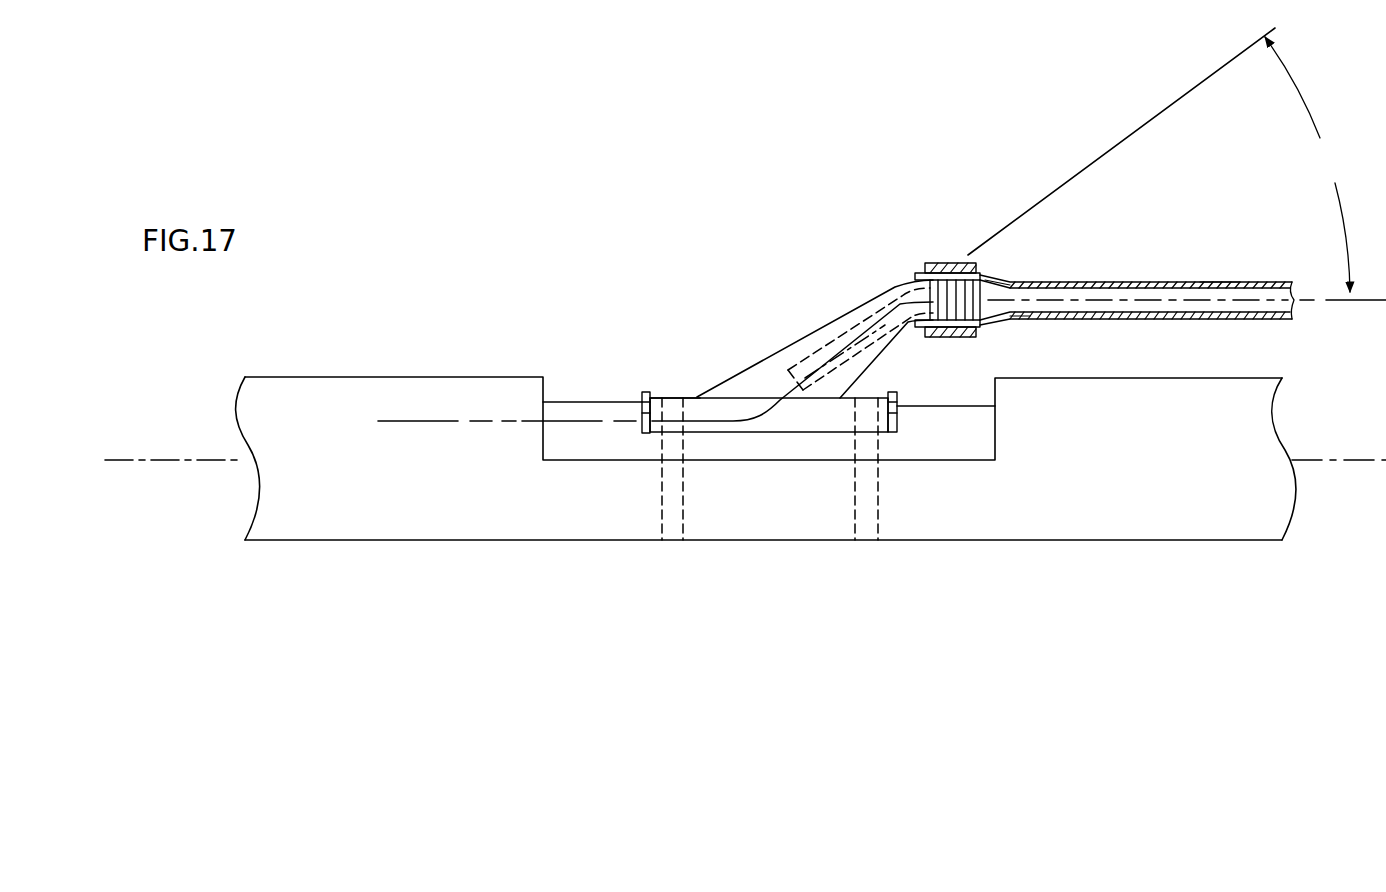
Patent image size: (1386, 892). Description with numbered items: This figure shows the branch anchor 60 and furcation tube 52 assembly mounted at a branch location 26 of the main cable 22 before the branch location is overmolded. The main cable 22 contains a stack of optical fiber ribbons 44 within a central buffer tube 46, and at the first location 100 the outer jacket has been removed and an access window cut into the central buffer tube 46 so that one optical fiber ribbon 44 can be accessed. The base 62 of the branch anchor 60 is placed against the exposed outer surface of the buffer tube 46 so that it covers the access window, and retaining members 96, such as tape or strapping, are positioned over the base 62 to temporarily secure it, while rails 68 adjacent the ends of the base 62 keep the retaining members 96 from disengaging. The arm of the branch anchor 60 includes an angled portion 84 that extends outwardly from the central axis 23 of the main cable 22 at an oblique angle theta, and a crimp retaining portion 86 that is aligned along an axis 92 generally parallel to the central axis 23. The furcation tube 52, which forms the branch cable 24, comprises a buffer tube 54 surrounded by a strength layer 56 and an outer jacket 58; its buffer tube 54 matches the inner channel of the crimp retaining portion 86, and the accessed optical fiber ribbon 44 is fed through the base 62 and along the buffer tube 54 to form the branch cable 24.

The main cable 22 is at (318, 540).
The central axis 23 is at (172, 461).
The branch cable 24 is at (1113, 282).
The branch location 26 is at (646, 270).
The optical fiber ribbon 44 is at (437, 421).
The central buffer tube 46 is at (573, 398).
The furcation tube 52 is at (1038, 319).
The buffer tube 54 is at (867, 315).
The strength layer 56 is at (997, 277).
The outer jacket 58 is at (1225, 282).
The branch anchor 60 is at (747, 358).
The base 62 is at (659, 396).
The rails 68 is at (642, 392).
The angled portion 84 is at (810, 332).
The crimp retaining portion 86 is at (907, 278).
The axis 92 is at (1337, 301).
The retaining members 96 is at (683, 513).
The first location 100 is at (546, 362).
The oblique angle theta is at (1159, 160).